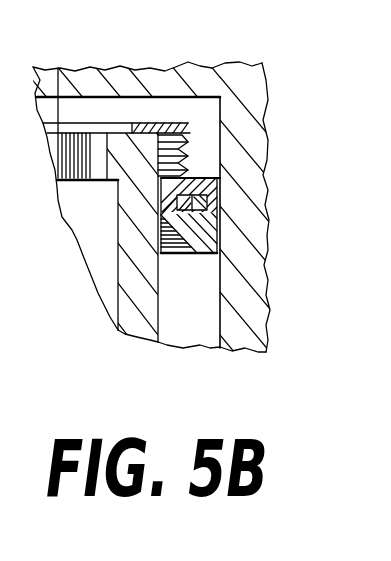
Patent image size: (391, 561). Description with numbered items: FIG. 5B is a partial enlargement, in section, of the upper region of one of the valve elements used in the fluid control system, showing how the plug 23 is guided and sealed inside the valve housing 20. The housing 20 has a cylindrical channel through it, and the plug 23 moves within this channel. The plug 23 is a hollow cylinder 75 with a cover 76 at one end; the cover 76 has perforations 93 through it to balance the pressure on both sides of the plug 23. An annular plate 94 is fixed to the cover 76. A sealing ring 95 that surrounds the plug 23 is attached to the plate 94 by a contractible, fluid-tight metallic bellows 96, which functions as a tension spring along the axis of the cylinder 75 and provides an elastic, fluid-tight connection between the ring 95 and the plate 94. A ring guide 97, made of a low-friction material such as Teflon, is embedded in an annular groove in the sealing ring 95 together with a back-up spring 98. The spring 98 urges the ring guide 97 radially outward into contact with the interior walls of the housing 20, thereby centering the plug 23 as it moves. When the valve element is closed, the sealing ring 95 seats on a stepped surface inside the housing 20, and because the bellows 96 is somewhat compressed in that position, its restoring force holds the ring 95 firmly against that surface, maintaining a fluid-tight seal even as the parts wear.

The valve housing 20 is at (280, 242).
The plug 23 is at (171, 333).
The hollow cylinder 75 is at (135, 317).
The cover 76 is at (58, 68).
The perforations 93 is at (90, 181).
The annular plate 94 is at (168, 127).
The sealing ring 95 is at (182, 254).
The metallic bellows 96 is at (192, 147).
The ring guide 97 is at (208, 200).
The back-up spring 98 is at (221, 177).